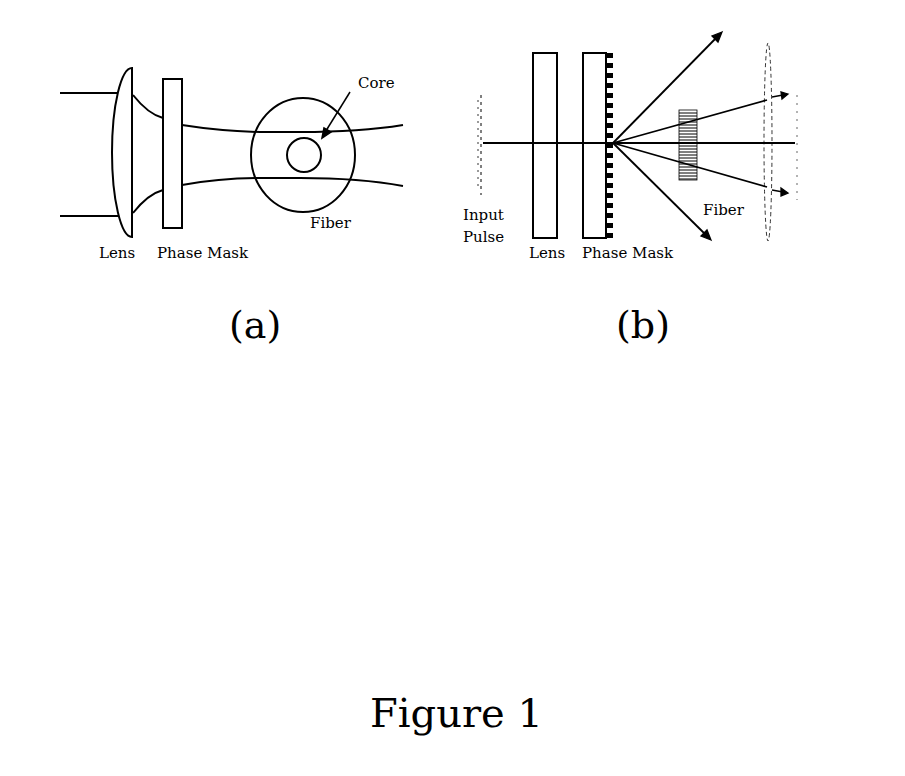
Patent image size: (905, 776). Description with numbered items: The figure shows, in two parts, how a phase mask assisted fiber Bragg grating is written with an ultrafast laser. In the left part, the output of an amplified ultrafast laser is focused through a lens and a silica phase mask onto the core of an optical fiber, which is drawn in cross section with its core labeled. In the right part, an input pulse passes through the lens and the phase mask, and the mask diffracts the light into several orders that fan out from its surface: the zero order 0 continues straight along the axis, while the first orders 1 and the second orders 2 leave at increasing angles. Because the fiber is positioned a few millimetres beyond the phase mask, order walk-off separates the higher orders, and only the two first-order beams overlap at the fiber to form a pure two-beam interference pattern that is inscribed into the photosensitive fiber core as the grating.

The +2 diffraction order beam 2 is at (675, 85).
The +1 diffraction order beam 1 is at (700, 117).
The zero diffraction order beam 0 is at (704, 136).